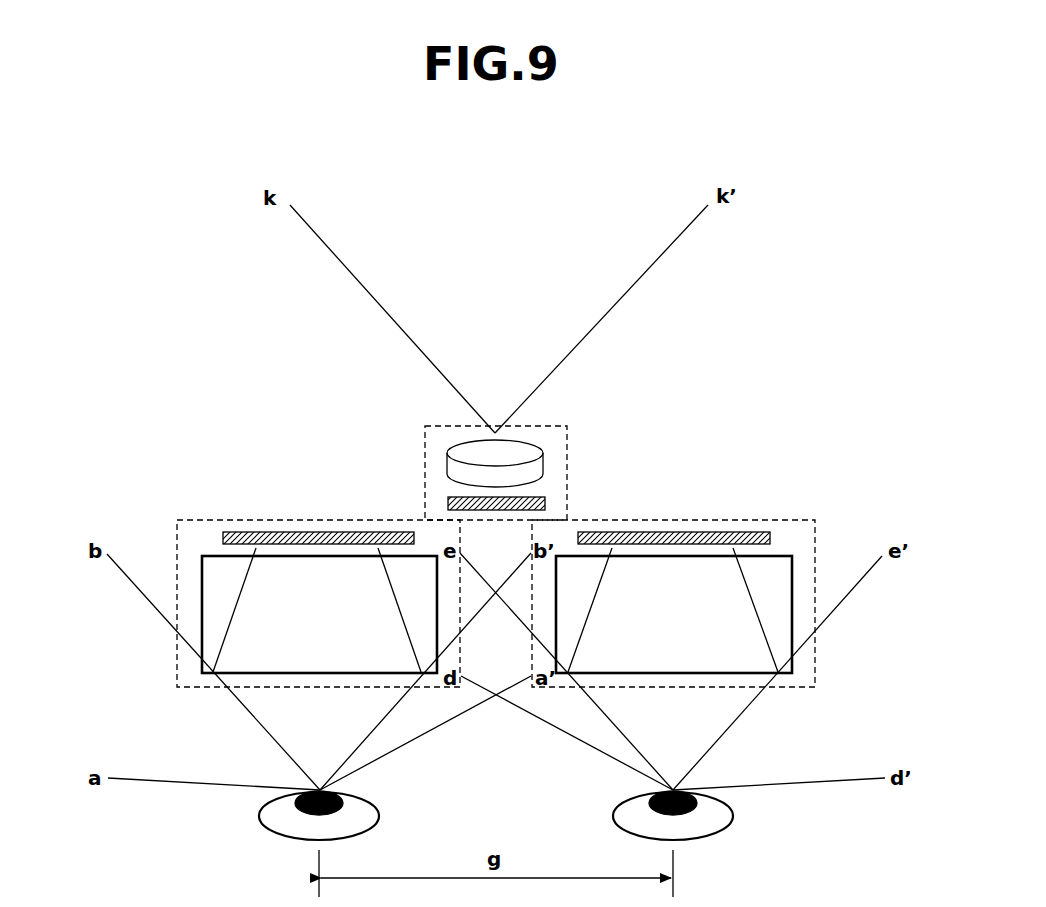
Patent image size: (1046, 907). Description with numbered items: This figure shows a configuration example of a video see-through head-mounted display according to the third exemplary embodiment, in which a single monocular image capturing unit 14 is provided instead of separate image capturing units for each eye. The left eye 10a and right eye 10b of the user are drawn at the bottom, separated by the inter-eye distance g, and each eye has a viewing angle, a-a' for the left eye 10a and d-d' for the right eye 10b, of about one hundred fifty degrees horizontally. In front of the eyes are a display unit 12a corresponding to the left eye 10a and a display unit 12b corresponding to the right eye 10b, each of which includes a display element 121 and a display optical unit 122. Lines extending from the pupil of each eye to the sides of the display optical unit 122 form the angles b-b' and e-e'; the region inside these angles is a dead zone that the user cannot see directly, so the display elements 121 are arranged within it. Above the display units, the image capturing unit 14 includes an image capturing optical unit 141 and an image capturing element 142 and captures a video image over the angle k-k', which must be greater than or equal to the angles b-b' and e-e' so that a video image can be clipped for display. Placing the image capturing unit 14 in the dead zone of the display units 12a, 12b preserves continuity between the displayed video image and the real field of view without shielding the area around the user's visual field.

The image capturing unit 14 is at (498, 473).
The image capturing optical unit 141 is at (450, 464).
The image capturing element 142 is at (450, 502).
The display unit 12a is at (275, 580).
The display unit 12b is at (712, 520).
The display element 121 is at (223, 540).
The display optical unit 122 is at (202, 594).
The eye 10a is at (276, 836).
The eye 10b is at (716, 836).